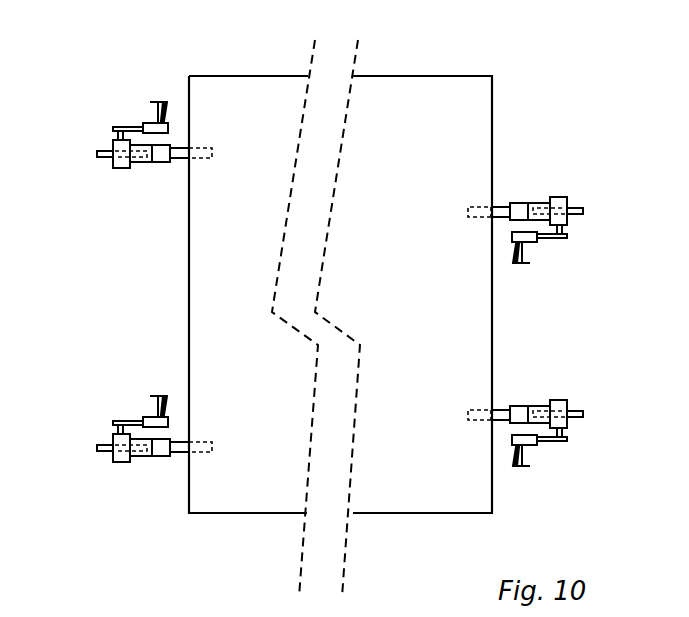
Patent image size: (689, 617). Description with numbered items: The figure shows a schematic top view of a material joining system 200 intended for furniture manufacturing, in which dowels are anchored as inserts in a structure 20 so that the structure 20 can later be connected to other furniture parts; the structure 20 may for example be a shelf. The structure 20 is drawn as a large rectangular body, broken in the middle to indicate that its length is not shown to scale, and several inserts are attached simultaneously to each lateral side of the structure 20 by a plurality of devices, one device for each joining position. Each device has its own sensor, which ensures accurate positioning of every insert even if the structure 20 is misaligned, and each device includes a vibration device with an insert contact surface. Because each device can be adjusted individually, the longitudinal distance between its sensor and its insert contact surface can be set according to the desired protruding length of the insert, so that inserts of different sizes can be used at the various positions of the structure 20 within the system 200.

The structure 20 is at (449, 128).
The material joining system 200 is at (394, 304).